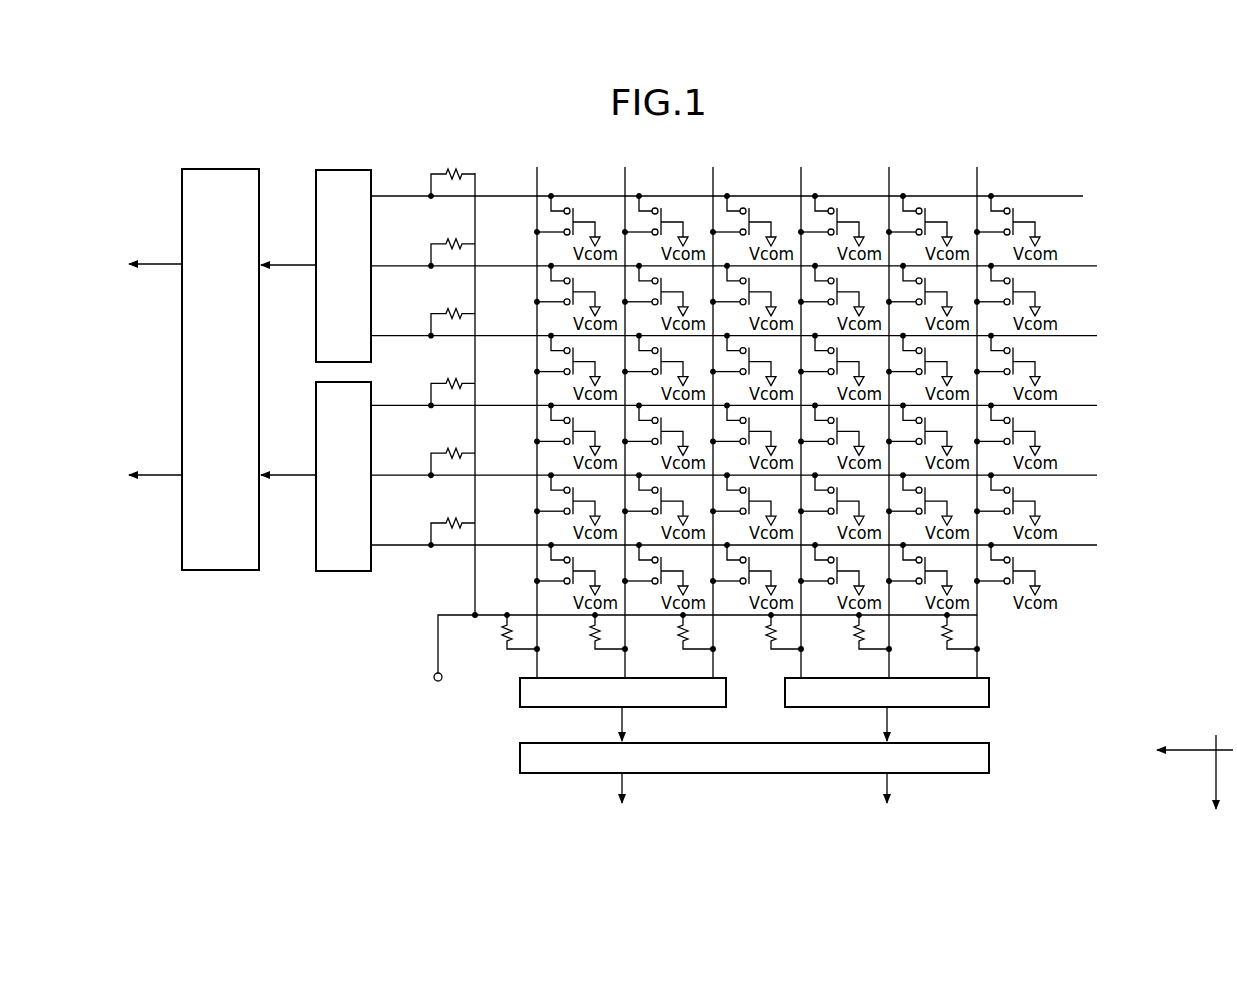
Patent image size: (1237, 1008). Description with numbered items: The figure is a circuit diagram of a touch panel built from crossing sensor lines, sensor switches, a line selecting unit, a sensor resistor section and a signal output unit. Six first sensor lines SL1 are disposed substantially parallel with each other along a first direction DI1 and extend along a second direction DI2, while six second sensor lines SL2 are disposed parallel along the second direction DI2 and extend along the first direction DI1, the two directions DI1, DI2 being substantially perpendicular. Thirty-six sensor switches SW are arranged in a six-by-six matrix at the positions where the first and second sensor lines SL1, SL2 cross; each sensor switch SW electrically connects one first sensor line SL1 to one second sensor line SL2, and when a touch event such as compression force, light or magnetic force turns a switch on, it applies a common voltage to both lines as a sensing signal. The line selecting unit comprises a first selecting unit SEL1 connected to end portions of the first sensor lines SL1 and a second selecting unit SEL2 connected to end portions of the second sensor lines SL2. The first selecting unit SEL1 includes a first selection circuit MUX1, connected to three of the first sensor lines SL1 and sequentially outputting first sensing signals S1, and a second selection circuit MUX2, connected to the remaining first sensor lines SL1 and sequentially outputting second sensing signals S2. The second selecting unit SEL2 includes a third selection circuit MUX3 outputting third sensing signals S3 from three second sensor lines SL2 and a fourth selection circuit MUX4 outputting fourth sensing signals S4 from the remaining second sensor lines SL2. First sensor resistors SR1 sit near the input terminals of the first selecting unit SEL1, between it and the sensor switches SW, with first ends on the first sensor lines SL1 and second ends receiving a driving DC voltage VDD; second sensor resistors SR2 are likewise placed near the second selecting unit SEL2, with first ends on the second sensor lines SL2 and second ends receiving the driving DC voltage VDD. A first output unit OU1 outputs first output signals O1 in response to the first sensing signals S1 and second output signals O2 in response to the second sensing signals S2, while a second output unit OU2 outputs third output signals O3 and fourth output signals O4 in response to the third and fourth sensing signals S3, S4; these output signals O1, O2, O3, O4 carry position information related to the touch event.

The first output unit OU1 is at (230, 570).
The second output unit OU2 is at (991, 758).
The first selection circuit MUX1 is at (343, 266).
The second selection circuit MUX2 is at (343, 476).
The third selection circuit MUX3 is at (623, 692).
The fourth selection circuit MUX4 is at (887, 692).
The first selecting unit SEL1 is at (345, 160).
The second selecting unit SEL2 is at (1000, 693).
The first sensor resistors SR1 is at (465, 160).
The second sensor resistors SR2 is at (963, 634).
The sensor switches SW is at (678, 208).
The first sensor lines SL1 is at (1083, 196).
The second sensor lines SL2 is at (980, 178).
The first sensing signals S1 is at (288, 254).
The second sensing signals S2 is at (288, 464).
The third sensing signals S3 is at (637, 724).
The fourth sensing signals S4 is at (902, 724).
The first output signals O1 is at (142, 264).
The second output signals O2 is at (142, 476).
The third output signals O3 is at (624, 802).
The fourth output signals O4 is at (889, 802).
The driving direct current voltage VDD is at (698, 661).
The first direction DI1 is at (1212, 783).
The second direction DI2 is at (1175, 751).